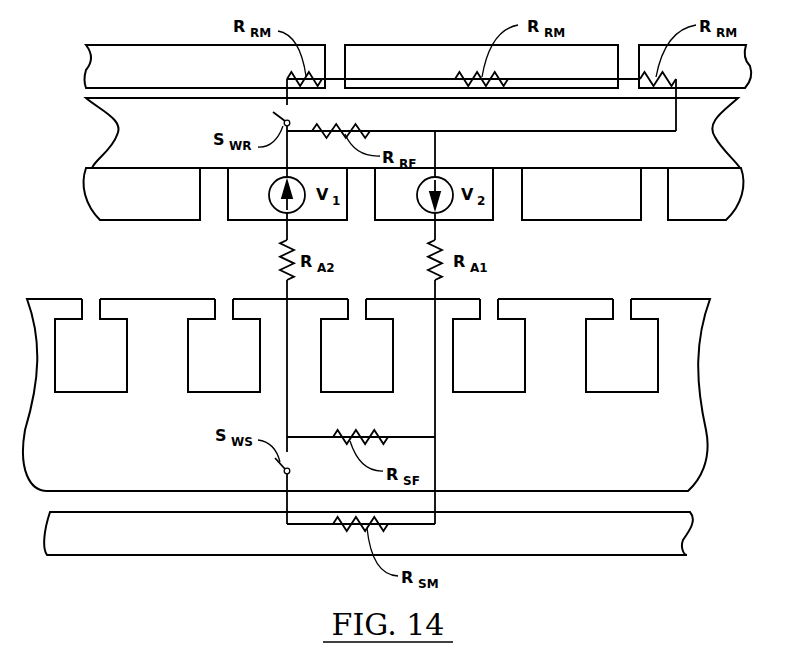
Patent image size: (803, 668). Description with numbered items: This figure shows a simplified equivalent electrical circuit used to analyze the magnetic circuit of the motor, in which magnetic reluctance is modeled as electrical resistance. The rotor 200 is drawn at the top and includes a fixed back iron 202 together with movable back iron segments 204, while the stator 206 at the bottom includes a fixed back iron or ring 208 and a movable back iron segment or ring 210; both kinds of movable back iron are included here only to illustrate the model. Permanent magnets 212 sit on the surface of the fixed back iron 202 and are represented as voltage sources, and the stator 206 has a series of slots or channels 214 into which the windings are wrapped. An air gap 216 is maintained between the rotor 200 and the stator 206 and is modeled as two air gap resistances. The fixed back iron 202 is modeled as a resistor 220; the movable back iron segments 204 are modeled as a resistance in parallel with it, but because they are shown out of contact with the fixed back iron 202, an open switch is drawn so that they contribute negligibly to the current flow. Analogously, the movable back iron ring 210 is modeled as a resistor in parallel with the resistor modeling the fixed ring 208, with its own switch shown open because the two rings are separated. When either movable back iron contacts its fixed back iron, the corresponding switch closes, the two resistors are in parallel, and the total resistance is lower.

The rotor 200 is at (75, 47).
The fixed back iron 202 is at (134, 149).
The movable back iron segments 204 is at (158, 81).
The stator 206 is at (721, 300).
The fixed back iron or ring 208 is at (140, 456).
The movable back iron segment or ring 210 is at (205, 548).
The permanent magnets 212 is at (130, 210).
The slots or channels 214 is at (74, 370).
The air gap 216 is at (568, 272).
The resistor 220 is at (355, 128).